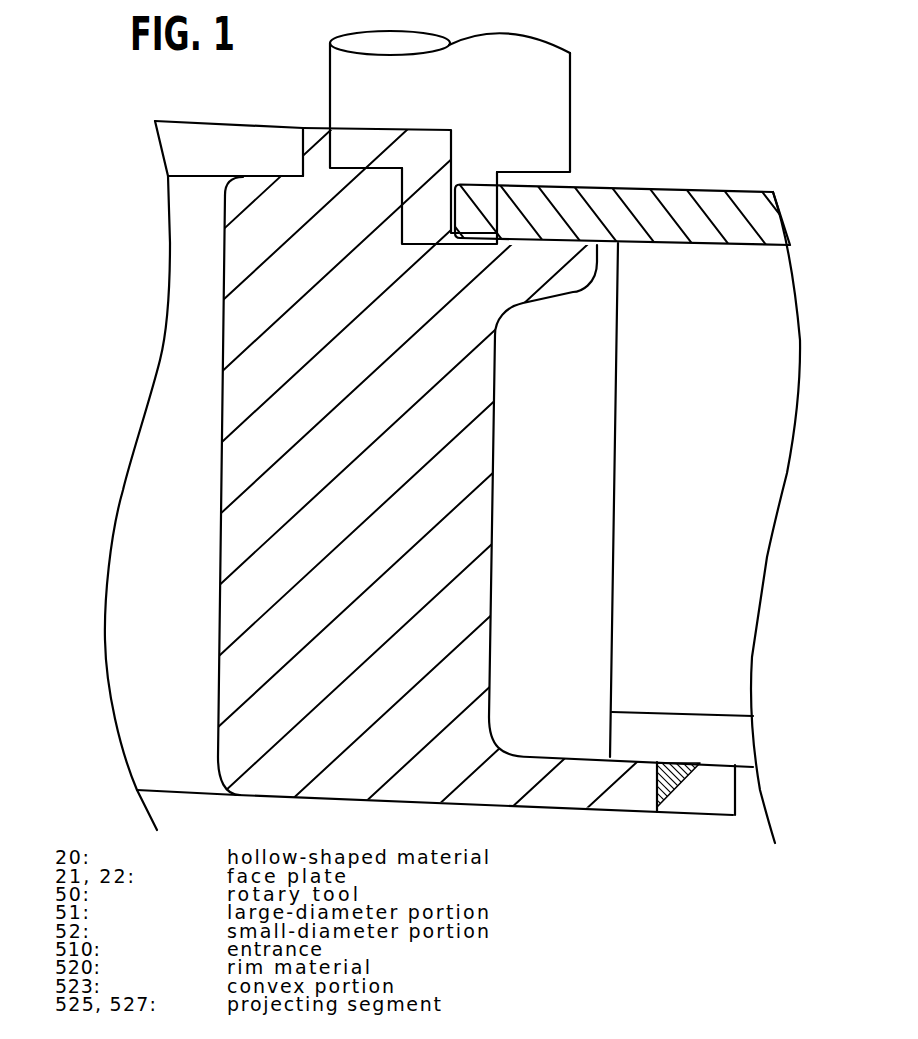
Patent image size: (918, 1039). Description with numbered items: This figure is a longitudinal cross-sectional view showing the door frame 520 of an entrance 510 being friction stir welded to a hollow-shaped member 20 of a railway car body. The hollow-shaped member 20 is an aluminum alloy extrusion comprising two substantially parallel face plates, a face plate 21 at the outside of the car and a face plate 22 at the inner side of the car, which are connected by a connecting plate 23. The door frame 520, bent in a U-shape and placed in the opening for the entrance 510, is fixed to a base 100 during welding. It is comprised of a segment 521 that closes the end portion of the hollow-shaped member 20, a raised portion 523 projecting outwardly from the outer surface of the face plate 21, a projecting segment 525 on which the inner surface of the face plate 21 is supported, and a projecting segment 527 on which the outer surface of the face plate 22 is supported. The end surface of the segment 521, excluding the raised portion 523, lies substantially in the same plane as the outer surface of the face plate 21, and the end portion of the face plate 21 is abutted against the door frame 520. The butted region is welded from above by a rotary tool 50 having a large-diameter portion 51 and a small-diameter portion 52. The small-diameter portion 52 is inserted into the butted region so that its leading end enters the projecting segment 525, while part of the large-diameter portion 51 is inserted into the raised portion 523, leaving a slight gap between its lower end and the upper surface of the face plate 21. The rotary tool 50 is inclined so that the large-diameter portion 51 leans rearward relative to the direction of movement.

The hollow-shaped member 20 is at (713, 180).
The face plate 21 is at (670, 218).
The face plate 22 is at (692, 730).
The connecting plate 23 is at (713, 489).
The rotary tool 50 is at (587, 72).
The large-diameter portion 51 is at (557, 97).
The small-diameter portion 52 is at (420, 190).
The base 100 is at (558, 828).
The entrance 510 is at (218, 295).
The door frame 520 is at (140, 413).
The segment 521 is at (233, 458).
The raised portion 523 is at (315, 162).
The projecting segment 525 is at (555, 292).
The projecting segment 527 is at (565, 773).